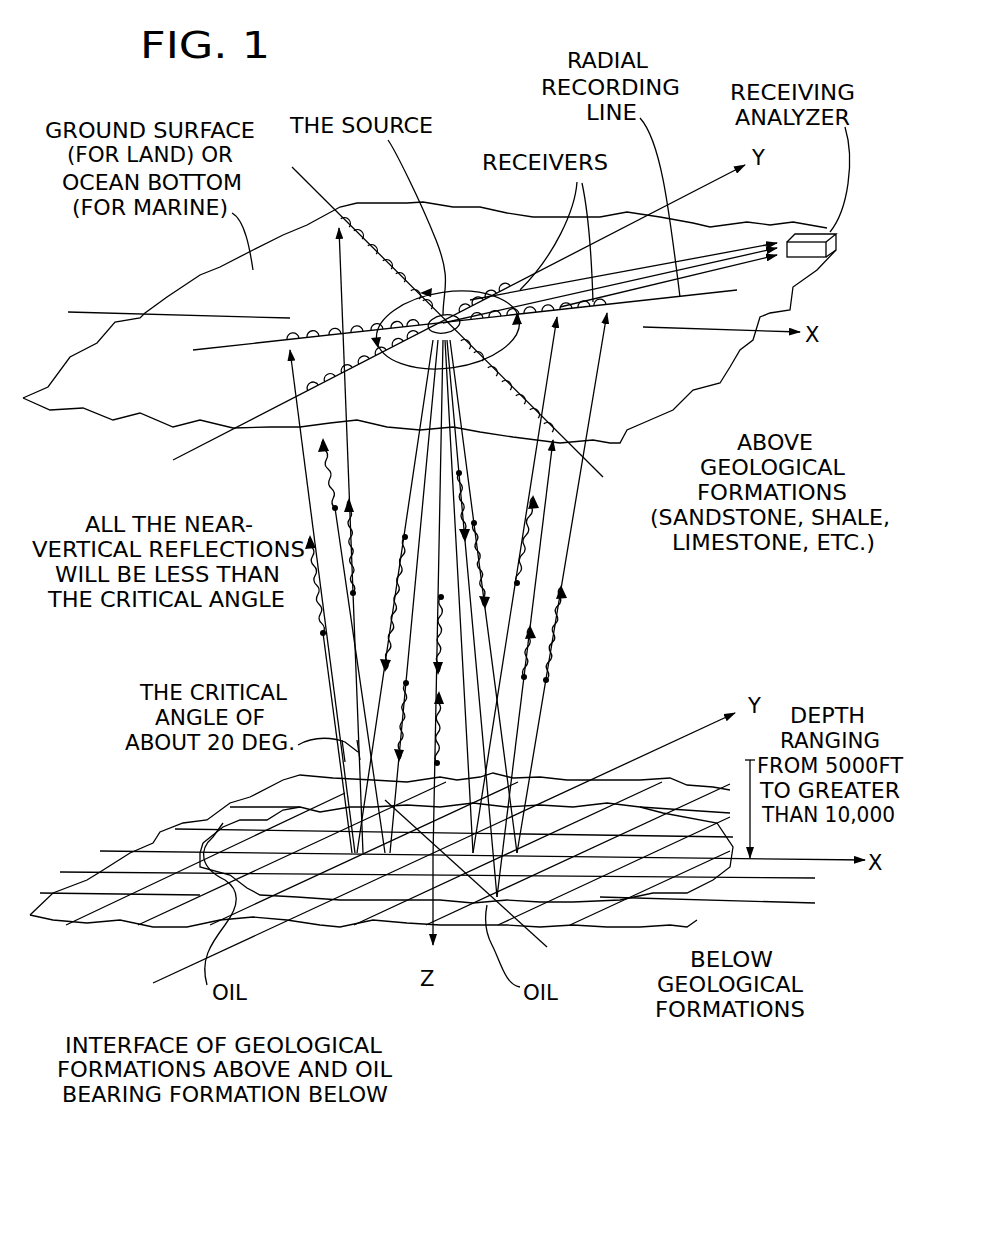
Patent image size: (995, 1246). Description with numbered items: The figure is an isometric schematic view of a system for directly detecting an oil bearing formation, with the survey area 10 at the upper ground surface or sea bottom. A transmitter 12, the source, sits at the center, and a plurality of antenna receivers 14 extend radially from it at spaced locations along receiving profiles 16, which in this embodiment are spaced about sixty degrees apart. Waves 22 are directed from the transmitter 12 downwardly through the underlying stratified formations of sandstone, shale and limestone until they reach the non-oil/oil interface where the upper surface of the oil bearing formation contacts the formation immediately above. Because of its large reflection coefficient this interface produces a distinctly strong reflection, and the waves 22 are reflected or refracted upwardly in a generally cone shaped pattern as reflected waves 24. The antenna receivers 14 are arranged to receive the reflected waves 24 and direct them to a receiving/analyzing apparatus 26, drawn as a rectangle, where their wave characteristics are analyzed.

The ground surface survey area 10 is at (620, 410).
The transmitter 12 is at (493, 280).
The antenna receivers 14 is at (293, 330).
The receiving profiles 16 is at (240, 350).
The waves 22 is at (455, 513).
The reflected waves 24 is at (527, 672).
The receiving/analyzing apparatus 26 is at (656, 278).